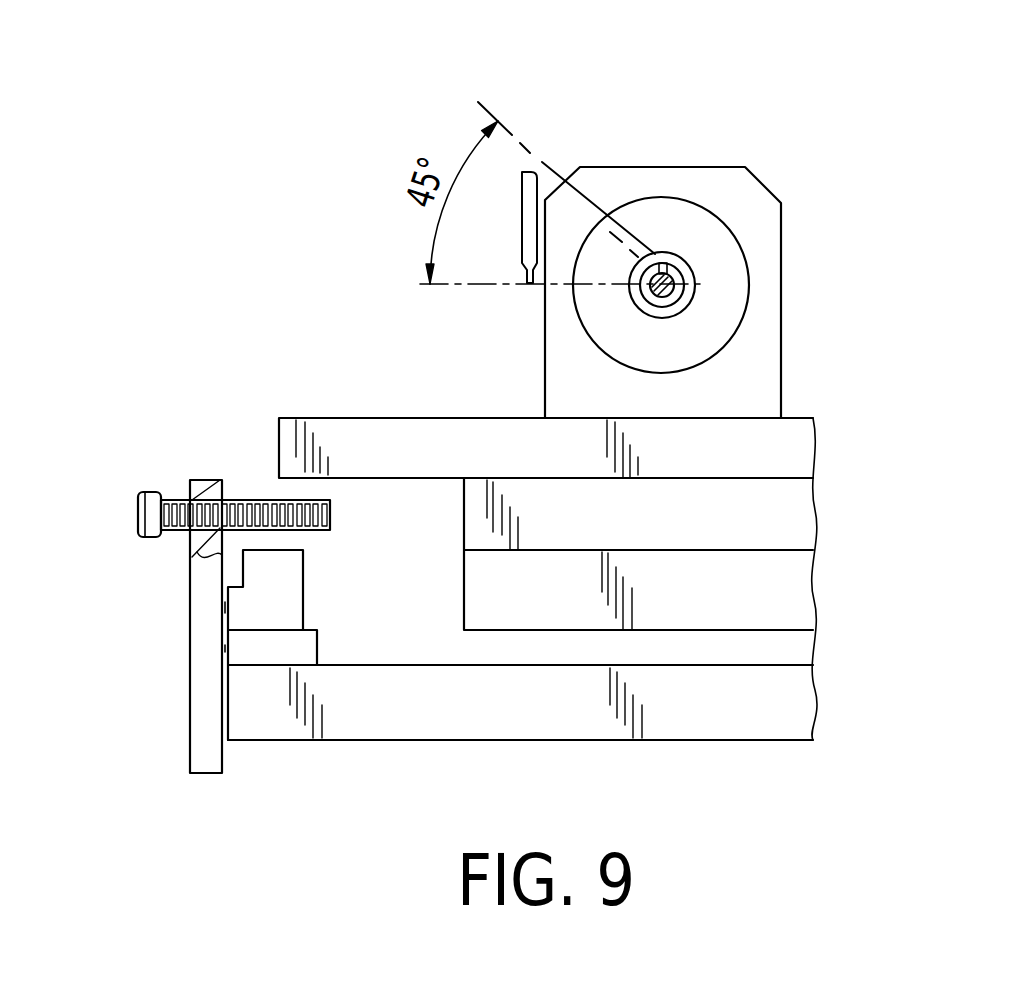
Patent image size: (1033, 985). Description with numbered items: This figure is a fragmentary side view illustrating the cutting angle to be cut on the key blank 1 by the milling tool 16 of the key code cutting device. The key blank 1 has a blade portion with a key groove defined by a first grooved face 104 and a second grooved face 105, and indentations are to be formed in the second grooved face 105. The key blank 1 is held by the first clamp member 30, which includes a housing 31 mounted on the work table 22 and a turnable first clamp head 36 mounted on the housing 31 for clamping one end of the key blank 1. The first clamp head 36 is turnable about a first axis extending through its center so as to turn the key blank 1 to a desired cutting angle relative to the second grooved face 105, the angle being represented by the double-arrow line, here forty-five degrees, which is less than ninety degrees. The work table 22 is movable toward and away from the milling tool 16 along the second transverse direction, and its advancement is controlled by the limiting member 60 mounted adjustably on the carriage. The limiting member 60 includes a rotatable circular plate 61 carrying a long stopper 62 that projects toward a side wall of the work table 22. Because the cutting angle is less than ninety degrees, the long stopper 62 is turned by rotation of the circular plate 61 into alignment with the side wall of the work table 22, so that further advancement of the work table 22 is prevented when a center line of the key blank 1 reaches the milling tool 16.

The key blank 1 is at (677, 290).
The milling tool 16 is at (529, 191).
The work table 22 is at (380, 432).
The first clamp member 30 is at (716, 216).
The housing 31 is at (763, 232).
The first clamp head 36 is at (693, 277).
The limiting member 60 is at (186, 551).
The circular plate 61 is at (200, 640).
The long stopper 62 is at (170, 502).
The first grooved face 104 is at (670, 264).
The second grooved face 105 is at (657, 266).